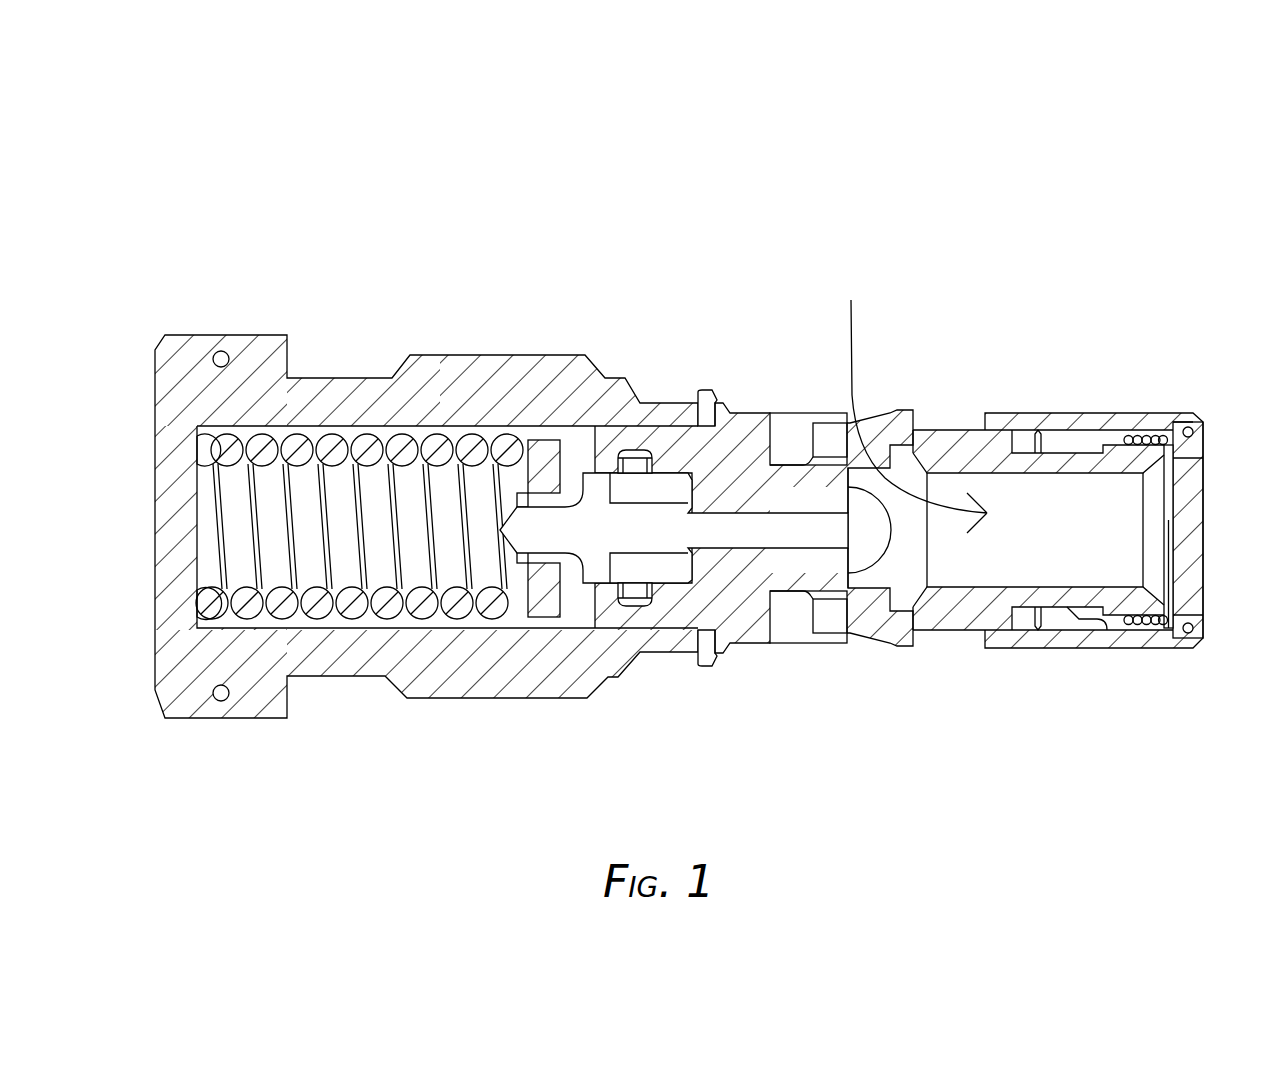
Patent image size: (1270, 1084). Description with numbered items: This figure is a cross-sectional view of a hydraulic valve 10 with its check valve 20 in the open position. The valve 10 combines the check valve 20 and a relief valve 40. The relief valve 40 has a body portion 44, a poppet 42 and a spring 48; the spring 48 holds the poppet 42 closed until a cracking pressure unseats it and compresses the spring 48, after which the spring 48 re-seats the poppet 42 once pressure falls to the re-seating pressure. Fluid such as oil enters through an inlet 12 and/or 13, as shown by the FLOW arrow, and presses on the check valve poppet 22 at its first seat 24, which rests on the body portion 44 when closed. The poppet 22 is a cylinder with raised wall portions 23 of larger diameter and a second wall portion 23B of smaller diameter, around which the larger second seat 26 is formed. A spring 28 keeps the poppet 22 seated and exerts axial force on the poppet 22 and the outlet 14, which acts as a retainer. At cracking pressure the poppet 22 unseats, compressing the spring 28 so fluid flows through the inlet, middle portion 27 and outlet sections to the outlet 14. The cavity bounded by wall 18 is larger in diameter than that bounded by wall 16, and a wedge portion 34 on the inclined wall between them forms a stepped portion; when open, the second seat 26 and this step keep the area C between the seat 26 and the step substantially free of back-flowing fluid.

The hydraulic valve 10 is at (582, 108).
The inlet 12 is at (780, 413).
The inlet 13 is at (797, 650).
The outlet 14 is at (1193, 510).
The wall 16 is at (947, 440).
The wall 18 is at (1150, 422).
The check valve 20 is at (868, 585).
The check valve poppet 22 is at (1075, 465).
The raised wall portion 23 is at (977, 450).
The second wall portion 23B is at (1090, 607).
The first seat 24 is at (908, 543).
The second seat 26 is at (1118, 437).
The middle portion 27 is at (957, 563).
The spring 28 is at (1160, 620).
The wedge portion 34 is at (1038, 430).
The relief valve 40 is at (352, 448).
The poppet 42 is at (575, 587).
The body portion 44 is at (800, 500).
The spring 48 is at (258, 448).
The area C is at (1072, 622).